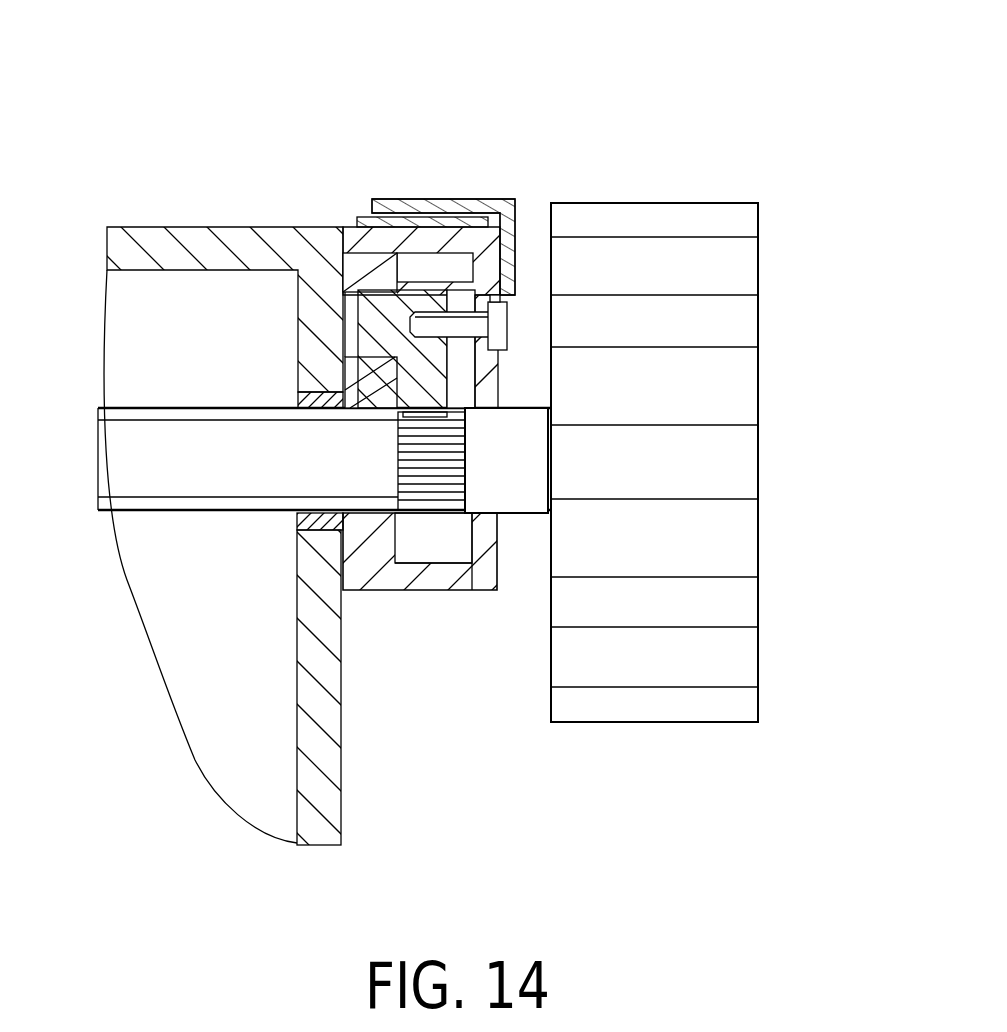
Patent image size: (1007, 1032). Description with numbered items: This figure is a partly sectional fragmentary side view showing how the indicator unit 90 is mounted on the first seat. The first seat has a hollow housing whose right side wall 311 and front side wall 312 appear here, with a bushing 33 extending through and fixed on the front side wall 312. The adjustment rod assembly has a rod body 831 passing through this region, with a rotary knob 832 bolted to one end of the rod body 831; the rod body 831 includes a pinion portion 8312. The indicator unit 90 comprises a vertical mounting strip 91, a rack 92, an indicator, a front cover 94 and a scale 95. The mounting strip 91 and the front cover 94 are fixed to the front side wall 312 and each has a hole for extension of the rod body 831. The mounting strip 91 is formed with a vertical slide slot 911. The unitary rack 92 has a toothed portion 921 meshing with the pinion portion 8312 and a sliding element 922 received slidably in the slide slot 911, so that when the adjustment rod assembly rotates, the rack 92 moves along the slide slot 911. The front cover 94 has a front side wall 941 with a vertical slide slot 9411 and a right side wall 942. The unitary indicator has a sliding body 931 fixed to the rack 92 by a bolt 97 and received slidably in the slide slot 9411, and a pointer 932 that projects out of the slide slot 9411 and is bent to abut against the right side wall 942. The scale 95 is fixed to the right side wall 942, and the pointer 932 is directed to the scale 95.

The right side wall 311 is at (153, 237).
The front side wall 312 is at (313, 788).
The bushing 33 is at (297, 562).
The rod body 831 is at (162, 505).
The pinion portion 8312 is at (425, 493).
The rotary knob 832 is at (733, 220).
The rack 92 is at (362, 320).
The toothed portion 921 is at (425, 415).
The sliding element 922 is at (363, 300).
The vertical mounting strip 91 is at (372, 545).
The vertical slide slot 911 is at (357, 247).
The indicator unit 90 is at (386, 594).
The front cover 94 is at (487, 528).
The front side wall 941 is at (492, 397).
The vertical slide slot 9411 is at (497, 369).
The right side wall 942 is at (383, 243).
The scale 95 is at (475, 298).
The bolt 97 is at (503, 317).
The sliding body 931 is at (490, 208).
The pointer 932 is at (418, 222).